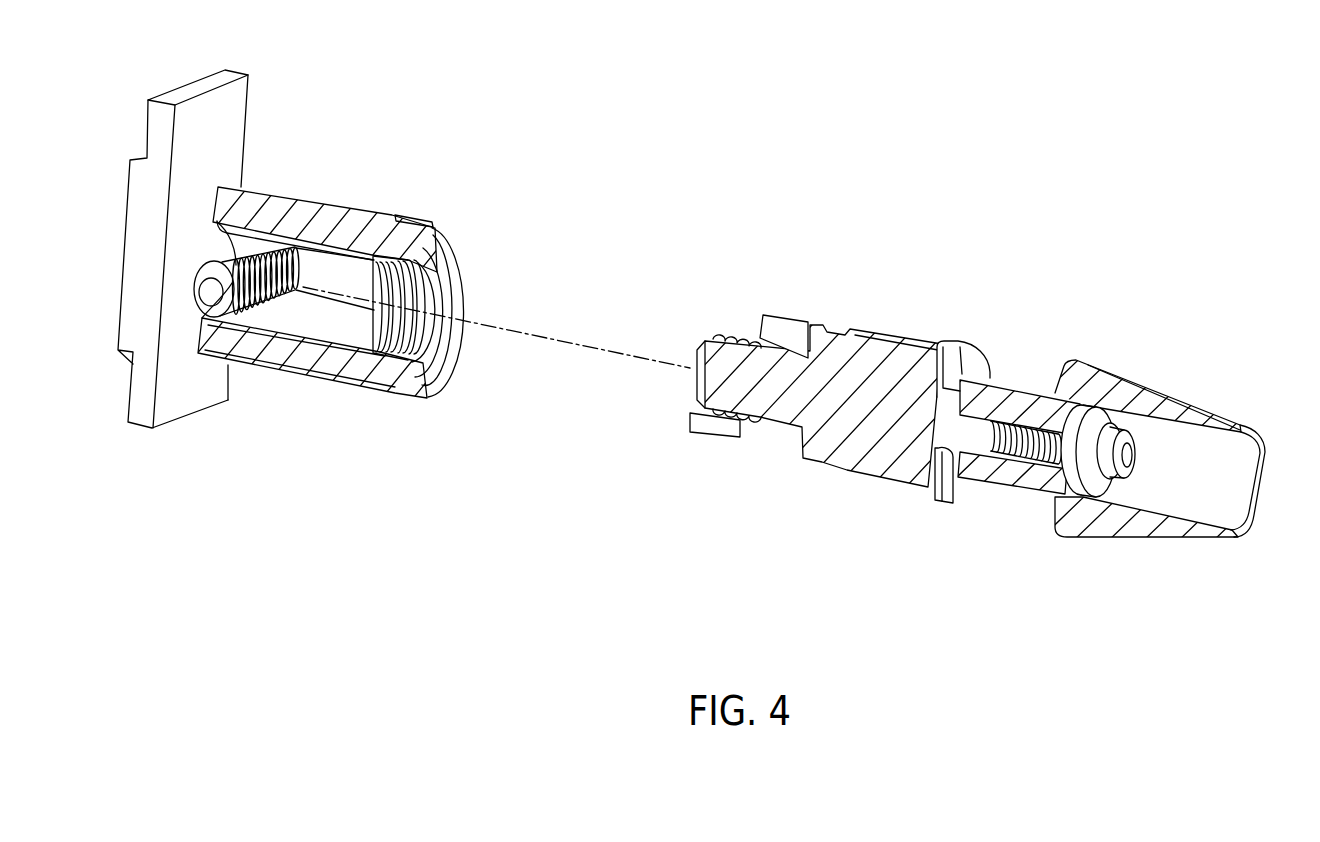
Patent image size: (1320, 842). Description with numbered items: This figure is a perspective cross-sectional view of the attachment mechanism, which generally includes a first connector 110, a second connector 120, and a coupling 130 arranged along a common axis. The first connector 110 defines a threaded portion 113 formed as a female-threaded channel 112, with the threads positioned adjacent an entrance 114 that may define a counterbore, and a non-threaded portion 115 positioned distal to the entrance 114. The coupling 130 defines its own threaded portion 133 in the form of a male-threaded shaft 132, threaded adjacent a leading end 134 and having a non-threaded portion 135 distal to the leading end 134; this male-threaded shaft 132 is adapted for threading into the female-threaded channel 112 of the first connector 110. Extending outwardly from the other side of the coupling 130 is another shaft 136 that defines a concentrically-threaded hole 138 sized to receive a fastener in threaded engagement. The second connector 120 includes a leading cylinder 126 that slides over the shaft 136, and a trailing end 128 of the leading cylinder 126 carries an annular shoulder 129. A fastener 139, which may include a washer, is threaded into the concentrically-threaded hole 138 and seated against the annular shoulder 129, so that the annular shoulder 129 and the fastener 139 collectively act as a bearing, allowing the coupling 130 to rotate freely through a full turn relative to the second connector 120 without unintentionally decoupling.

The first connector 110 is at (361, 336).
The female-threaded channel 112 is at (383, 385).
The threaded portion 113 is at (410, 220).
The entrance 114 is at (460, 322).
The non-threaded portion 115 is at (283, 370).
The second connector 120 is at (1026, 453).
The leading cylinder 126 is at (1008, 480).
The trailing end 128 is at (1077, 517).
The annular shoulder 129 is at (1077, 402).
The coupling 130 is at (821, 408).
The male-threaded shaft 132 is at (723, 338).
The threaded portion 133 is at (712, 438).
The leading end 134 is at (707, 375).
The non-threaded portion 135 is at (788, 313).
The shaft 136 is at (935, 490).
The concentrically-threaded hole 138 is at (987, 420).
The fastener 139 is at (1128, 443).